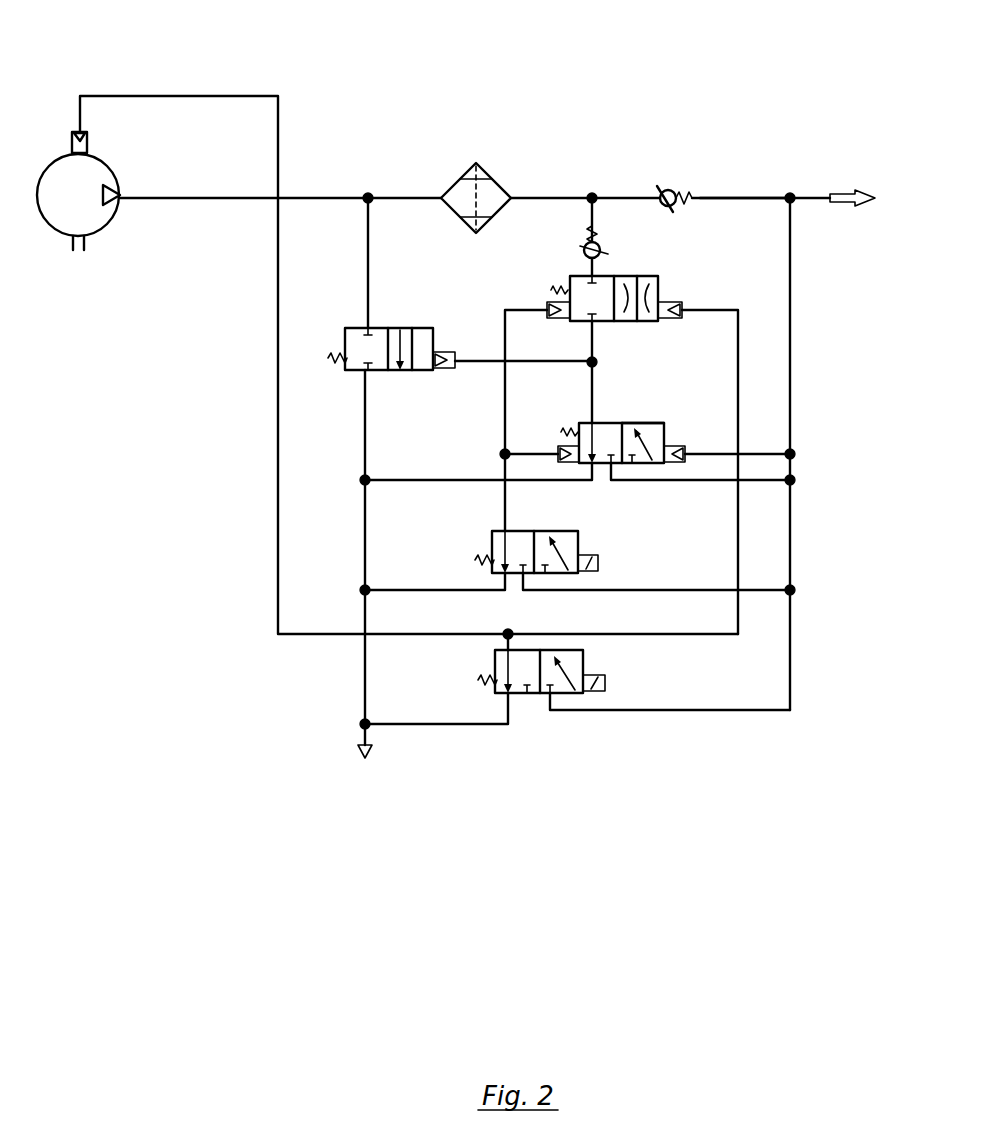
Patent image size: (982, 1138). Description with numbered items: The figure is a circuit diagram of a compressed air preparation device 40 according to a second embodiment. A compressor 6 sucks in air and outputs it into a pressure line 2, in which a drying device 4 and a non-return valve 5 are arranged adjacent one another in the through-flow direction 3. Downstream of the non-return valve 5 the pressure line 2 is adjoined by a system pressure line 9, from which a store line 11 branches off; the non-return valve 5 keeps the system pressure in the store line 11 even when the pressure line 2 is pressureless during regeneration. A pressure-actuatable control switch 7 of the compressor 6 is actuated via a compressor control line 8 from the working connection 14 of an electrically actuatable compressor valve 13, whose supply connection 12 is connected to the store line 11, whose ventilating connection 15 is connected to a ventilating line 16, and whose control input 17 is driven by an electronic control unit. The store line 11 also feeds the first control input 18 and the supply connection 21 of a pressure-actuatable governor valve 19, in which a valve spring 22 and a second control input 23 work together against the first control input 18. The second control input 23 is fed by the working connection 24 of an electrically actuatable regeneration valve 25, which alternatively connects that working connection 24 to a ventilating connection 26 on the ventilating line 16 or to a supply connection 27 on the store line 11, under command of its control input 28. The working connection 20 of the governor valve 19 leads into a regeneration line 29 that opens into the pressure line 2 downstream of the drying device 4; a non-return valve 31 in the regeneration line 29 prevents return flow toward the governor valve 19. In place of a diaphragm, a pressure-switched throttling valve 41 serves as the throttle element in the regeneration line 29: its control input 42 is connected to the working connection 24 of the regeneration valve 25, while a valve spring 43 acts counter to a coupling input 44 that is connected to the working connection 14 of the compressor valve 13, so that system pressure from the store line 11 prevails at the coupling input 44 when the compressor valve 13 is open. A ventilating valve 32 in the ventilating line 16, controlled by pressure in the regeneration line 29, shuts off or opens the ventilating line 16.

The pressure line 2 is at (318, 198).
The through-flow direction 3 is at (847, 196).
The drying device 4 is at (452, 185).
The non-return valve 5 is at (663, 190).
The compressor 6 is at (67, 187).
The control switch 7 is at (79, 134).
The compressor control line 8 is at (154, 96).
The system pressure line 9 is at (742, 198).
The store line 11 is at (790, 430).
The supply connection 12 is at (556, 702).
The compressor valve 13 is at (519, 697).
The working connection 14 is at (492, 643).
The ventilating connection 15 is at (498, 702).
The ventilating line 16 is at (365, 668).
The control input 17 is at (591, 692).
The first control input 18 is at (674, 452).
The governor valve 19 is at (645, 418).
The working connection 20 is at (602, 415).
The supply connection 21 is at (620, 470).
The valve spring 22 is at (567, 426).
The second control input 23 is at (568, 451).
The working connection 24 is at (497, 523).
The regeneration valve 25 is at (594, 528).
The ventilating connection 26 is at (496, 580).
The supply connection 27 is at (533, 579).
The control input 28 is at (600, 560).
The regeneration line 29 is at (600, 214).
The non-return valve 31 is at (606, 257).
The ventilating valve 32 is at (365, 350).
The compressed air preparation device 40 is at (235, 829).
The throttling valve 41 is at (679, 282).
The control input 42 is at (548, 300).
The valve spring 43 is at (538, 280).
The coupling input 44 is at (684, 305).